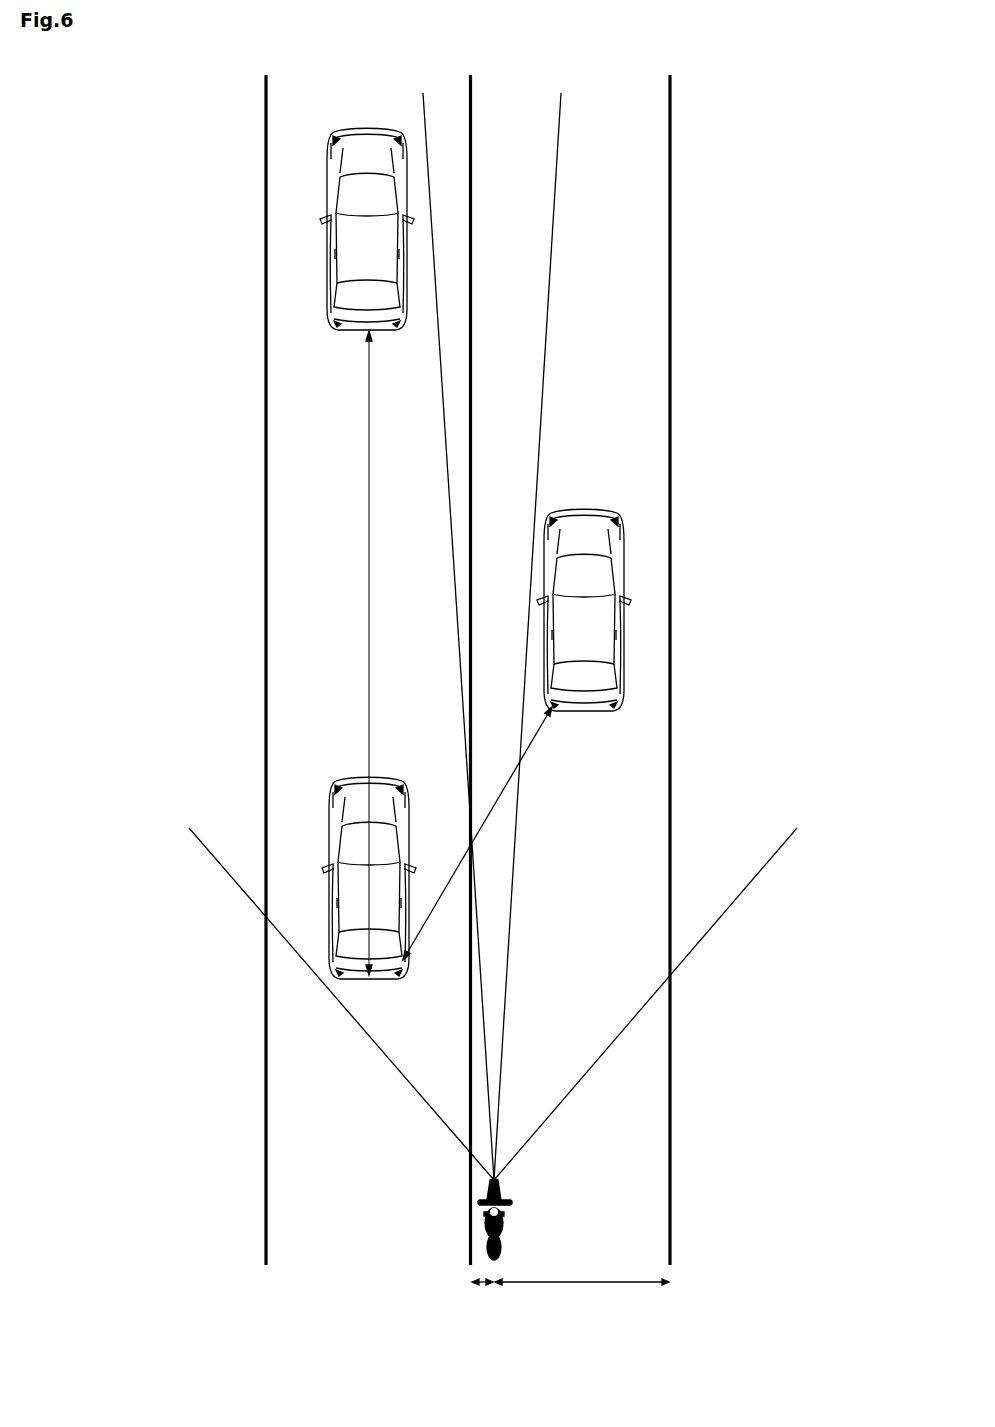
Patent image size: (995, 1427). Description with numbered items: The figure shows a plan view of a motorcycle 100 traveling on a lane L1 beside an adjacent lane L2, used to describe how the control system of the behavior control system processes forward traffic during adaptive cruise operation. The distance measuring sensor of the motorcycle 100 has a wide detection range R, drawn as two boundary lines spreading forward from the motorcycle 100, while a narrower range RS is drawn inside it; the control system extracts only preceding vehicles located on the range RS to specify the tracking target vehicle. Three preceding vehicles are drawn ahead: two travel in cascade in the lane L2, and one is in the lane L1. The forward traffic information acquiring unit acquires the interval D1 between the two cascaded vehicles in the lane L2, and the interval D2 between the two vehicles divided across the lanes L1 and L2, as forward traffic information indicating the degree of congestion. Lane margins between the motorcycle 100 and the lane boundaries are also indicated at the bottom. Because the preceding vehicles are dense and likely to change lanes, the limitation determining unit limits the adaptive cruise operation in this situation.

The motorcycle 100 is at (483, 1215).
The lane L1 is at (647, 1233).
The lane L2 is at (290, 1235).
The range RS is at (553, 203).
The detection range R is at (202, 843).
The interval D1 is at (352, 653).
The interval D2 is at (477, 833).